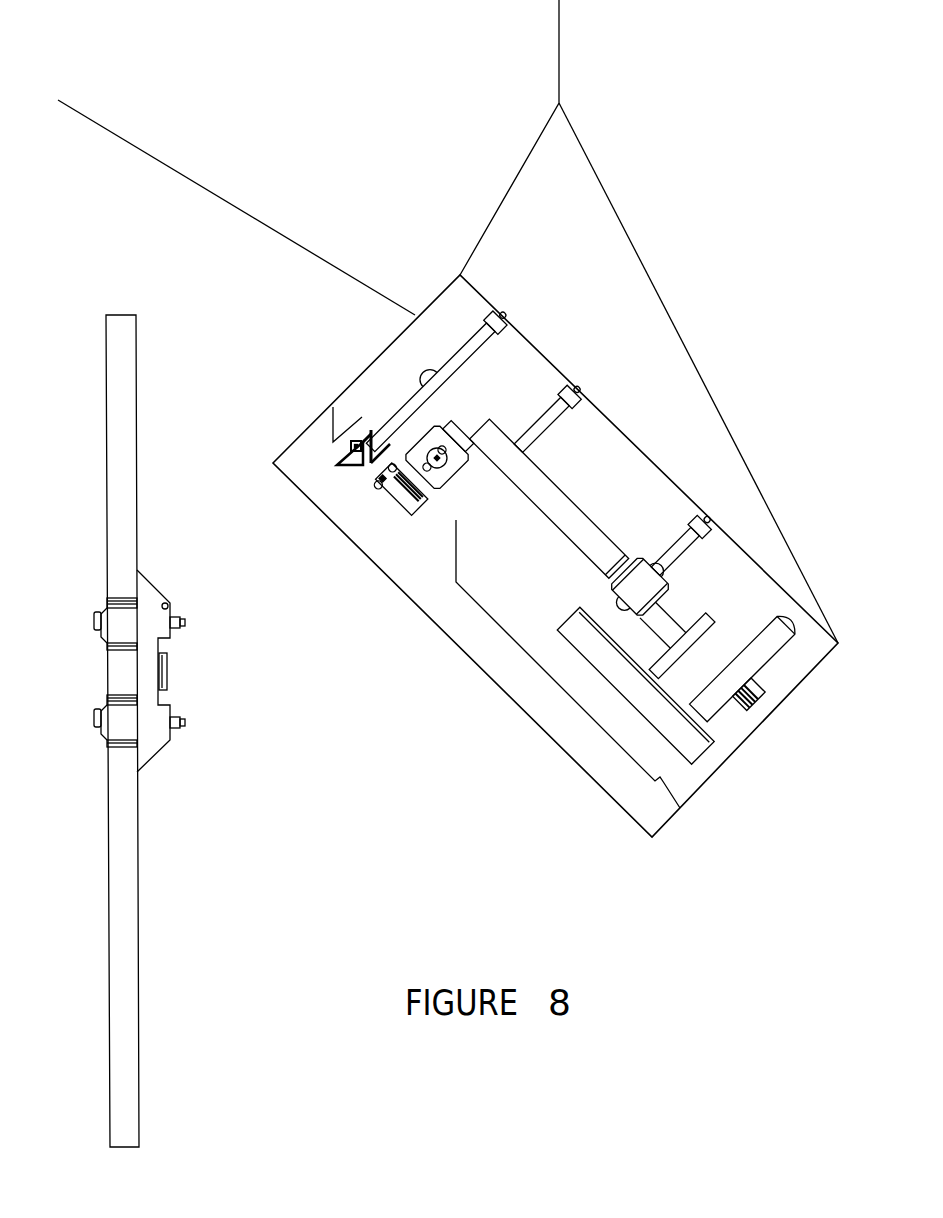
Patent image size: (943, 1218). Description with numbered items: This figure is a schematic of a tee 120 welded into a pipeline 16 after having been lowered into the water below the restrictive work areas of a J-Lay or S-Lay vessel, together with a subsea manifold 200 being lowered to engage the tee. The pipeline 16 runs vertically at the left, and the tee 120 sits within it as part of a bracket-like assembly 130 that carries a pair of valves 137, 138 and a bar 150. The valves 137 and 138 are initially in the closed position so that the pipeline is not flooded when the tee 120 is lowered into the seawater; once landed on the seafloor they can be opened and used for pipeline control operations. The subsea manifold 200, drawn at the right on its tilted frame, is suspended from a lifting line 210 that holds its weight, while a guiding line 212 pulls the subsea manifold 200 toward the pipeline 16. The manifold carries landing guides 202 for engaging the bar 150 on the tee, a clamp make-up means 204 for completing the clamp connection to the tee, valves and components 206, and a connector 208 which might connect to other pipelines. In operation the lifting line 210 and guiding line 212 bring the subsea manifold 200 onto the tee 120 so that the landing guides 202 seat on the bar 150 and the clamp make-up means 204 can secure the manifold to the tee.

The pipeline 16 is at (140, 1053).
The tee 120 is at (180, 672).
The bracket 130 is at (102, 749).
The valve 137 is at (98, 722).
The valve 138 is at (100, 635).
The bar 150 is at (168, 604).
The subsea manifold 200 is at (682, 443).
The landing guides 202 is at (338, 463).
The clamp make-up means 204 is at (393, 503).
The valves and components 206 is at (670, 587).
The connector 208 is at (768, 698).
The lifting line 210 is at (561, 40).
The guiding line 212 is at (205, 176).